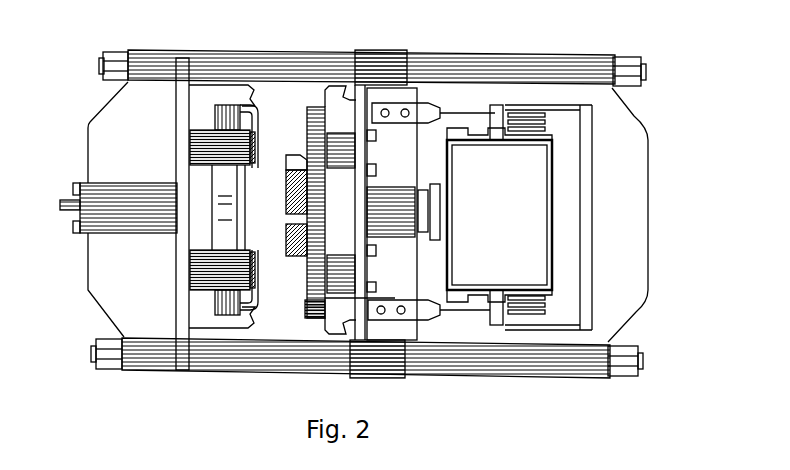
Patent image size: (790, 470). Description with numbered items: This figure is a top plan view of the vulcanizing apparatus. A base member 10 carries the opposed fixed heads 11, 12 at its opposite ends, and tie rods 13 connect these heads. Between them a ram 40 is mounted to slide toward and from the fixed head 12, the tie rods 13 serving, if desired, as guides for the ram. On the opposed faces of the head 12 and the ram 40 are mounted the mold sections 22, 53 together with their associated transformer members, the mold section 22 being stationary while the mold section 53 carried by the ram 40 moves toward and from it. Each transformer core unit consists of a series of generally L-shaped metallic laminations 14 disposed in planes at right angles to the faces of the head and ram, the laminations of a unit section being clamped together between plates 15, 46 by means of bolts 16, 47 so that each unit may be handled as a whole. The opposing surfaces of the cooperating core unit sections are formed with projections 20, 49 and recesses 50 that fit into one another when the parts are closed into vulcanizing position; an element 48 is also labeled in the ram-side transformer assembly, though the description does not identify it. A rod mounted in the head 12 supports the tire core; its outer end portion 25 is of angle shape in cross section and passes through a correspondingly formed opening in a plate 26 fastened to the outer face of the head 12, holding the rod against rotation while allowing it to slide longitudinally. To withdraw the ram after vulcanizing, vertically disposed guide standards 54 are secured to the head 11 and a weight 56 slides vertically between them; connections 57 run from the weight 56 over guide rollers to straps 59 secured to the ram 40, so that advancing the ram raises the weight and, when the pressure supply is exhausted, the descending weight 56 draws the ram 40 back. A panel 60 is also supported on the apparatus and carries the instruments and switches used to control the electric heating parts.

The base member 10 is at (569, 218).
The fixed head 11 is at (607, 170).
The fixed head 12 is at (128, 263).
The tie rods 13 is at (447, 68).
The metallic laminations 14 is at (196, 146).
The plates 15 is at (205, 98).
The bolts 16 is at (196, 203).
The projections 20 is at (252, 110).
The mold section 22 is at (226, 124).
The outer end portion of the rod 25 is at (66, 205).
The plate 26 is at (82, 212).
The ram 40 is at (390, 165).
The plates 46 is at (340, 192).
The bolts 47 is at (340, 230).
The shaft line 48 is at (325, 298).
The projections 49 is at (290, 160).
The recesses 50 is at (330, 100).
The mold section 53 is at (315, 318).
The guide standards 54 is at (526, 118).
The weight 56 is at (515, 208).
The connections 57 is at (490, 322).
The straps 59 is at (410, 312).
The panel 60 is at (586, 232).